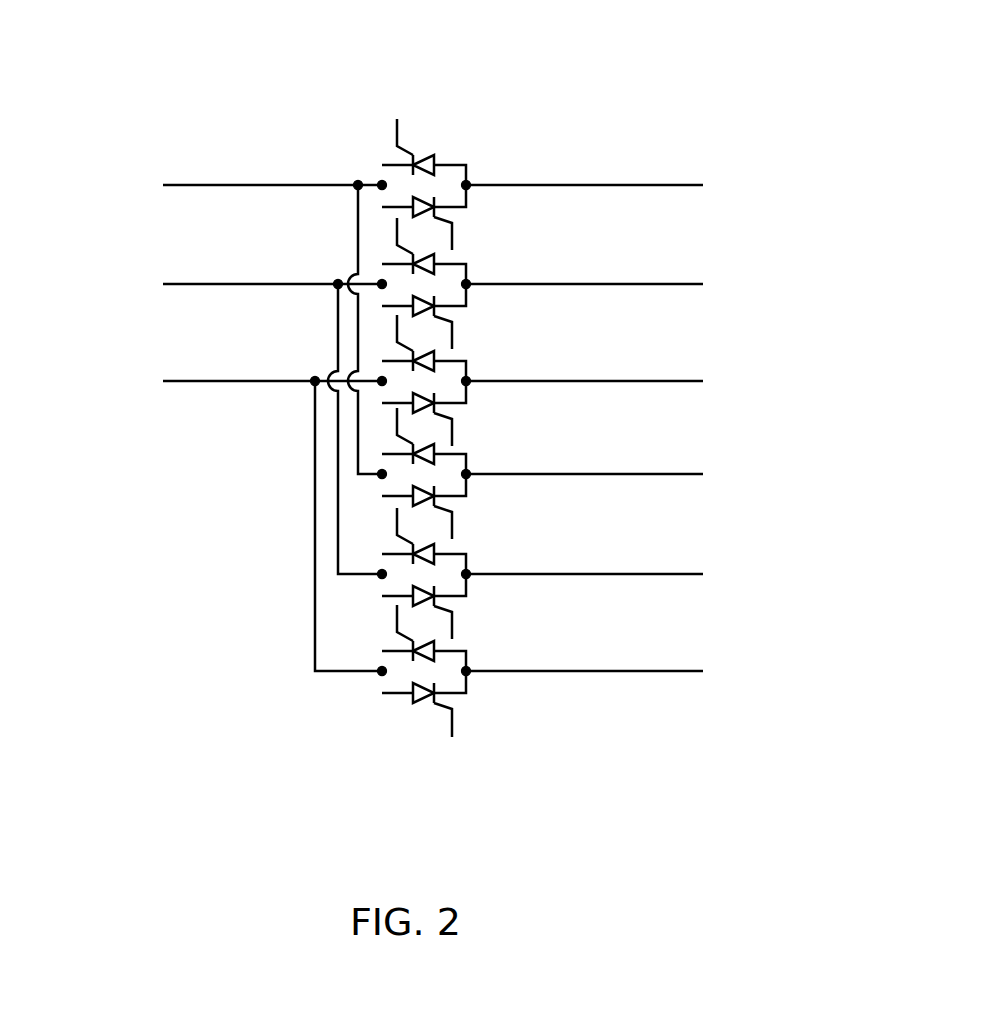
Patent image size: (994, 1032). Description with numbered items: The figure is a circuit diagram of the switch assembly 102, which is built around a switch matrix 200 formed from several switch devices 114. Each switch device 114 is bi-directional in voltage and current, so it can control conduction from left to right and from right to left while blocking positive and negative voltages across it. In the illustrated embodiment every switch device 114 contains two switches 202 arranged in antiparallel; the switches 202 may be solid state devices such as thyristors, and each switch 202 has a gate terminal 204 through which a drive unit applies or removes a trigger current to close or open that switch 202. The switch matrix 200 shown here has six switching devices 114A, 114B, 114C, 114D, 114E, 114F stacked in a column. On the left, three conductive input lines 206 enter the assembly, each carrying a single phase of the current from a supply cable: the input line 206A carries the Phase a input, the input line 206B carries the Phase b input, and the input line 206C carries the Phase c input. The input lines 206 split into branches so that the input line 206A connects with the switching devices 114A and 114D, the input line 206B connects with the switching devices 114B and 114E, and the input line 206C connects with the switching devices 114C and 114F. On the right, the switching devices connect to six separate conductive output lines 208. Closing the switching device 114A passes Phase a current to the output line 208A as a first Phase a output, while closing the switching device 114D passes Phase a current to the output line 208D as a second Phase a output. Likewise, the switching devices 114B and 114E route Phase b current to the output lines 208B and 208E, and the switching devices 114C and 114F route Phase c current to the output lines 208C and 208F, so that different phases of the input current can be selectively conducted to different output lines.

The switch assembly 102 is at (727, 768).
The switch matrix 200 is at (485, 62).
The switch device 114 is at (367, 153).
The switching device 114A is at (467, 202).
The switching device 114B is at (467, 301).
The switching device 114C is at (467, 398).
The switching device 114D is at (467, 491).
The switching device 114E is at (467, 591).
The switching device 114F is at (467, 688).
The switch 202 is at (423, 153).
The gate terminal 204 is at (398, 120).
The input line 206 is at (171, 203).
The input line 206A is at (225, 187).
The input line 206B is at (225, 286).
The input line 206C is at (225, 383).
The output line 208 is at (689, 203).
The output line 208A is at (618, 188).
The output line 208B is at (618, 287).
The output line 208C is at (618, 384).
The output line 208D is at (618, 477).
The output line 208E is at (618, 577).
The output line 208F is at (618, 674).